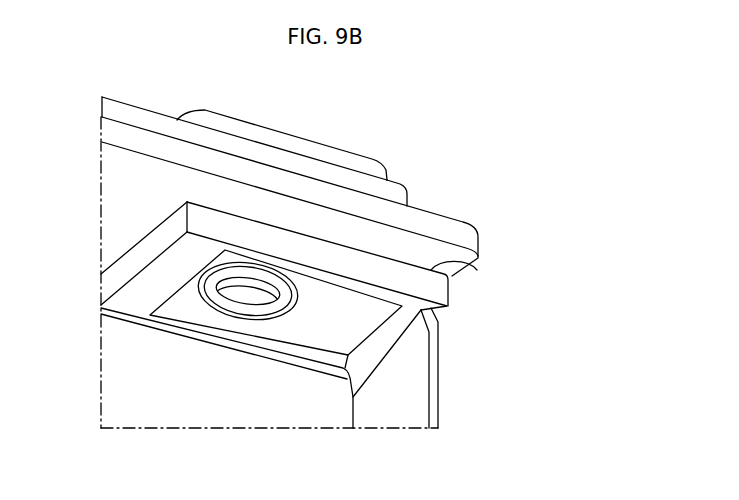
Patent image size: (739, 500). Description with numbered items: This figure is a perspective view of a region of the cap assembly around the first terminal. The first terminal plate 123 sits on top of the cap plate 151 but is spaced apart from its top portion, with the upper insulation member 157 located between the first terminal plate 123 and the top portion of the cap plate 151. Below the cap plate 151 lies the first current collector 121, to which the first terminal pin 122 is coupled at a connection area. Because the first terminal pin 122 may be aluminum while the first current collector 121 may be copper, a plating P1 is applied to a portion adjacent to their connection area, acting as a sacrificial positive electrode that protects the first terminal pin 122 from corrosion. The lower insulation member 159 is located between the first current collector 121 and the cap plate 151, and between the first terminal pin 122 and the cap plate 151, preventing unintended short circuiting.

The first current collector 121 is at (452, 368).
The first terminal pin 122 is at (258, 312).
The first terminal plate 123 is at (328, 150).
The cap plate 151 is at (452, 220).
The upper insulation member 157 is at (395, 192).
The lower insulation member 159 is at (480, 268).
The plating P1 is at (187, 303).